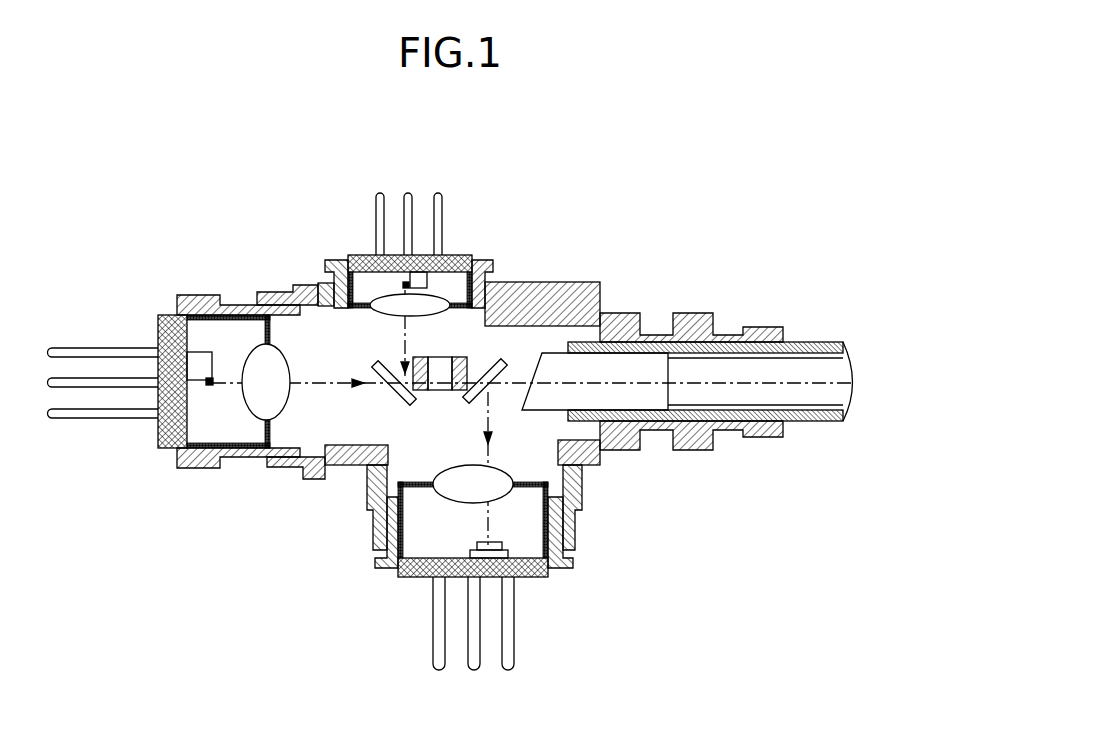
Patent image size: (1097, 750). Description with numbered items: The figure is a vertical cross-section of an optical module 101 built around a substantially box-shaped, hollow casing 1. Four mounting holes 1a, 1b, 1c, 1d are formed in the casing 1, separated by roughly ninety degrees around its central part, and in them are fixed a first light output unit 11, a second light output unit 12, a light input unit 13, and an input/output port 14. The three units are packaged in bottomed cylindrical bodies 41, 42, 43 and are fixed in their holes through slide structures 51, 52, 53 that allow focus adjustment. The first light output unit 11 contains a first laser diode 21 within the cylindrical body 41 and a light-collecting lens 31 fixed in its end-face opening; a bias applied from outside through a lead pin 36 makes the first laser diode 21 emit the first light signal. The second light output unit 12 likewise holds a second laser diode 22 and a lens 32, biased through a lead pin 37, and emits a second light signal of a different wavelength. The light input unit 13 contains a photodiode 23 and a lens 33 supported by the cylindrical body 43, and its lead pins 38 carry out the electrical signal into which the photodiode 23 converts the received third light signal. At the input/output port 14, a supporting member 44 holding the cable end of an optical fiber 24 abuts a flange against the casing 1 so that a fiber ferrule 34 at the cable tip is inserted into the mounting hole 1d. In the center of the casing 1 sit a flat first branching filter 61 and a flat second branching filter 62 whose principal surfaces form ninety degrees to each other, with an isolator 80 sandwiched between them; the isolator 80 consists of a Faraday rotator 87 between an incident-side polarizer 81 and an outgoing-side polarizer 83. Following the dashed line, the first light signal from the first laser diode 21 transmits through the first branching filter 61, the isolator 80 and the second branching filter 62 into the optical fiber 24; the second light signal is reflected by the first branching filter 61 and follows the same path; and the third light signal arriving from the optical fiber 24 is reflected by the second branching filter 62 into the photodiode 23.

The optical module 101 is at (530, 184).
The casing 1 is at (585, 282).
The mounting hole 1a is at (315, 470).
The mounting hole 1b is at (530, 293).
The mounting hole 1c is at (372, 498).
The mounting hole 1d is at (595, 432).
The first light output unit 11 is at (165, 323).
The second light output unit 12 is at (452, 257).
The light input unit 13 is at (555, 579).
The input/output port 14 is at (638, 446).
The first laser diode 21 is at (212, 378).
The second laser diode 22 is at (404, 283).
The photodiode 23 is at (478, 546).
The optical fiber 24 is at (727, 365).
The lens 31 is at (246, 410).
The lens 32 is at (355, 278).
The lens 33 is at (535, 578).
The fiber ferrule 34 is at (650, 365).
The lead pin 36 is at (58, 350).
The lead pin 37 is at (378, 205).
The lead pins of third subassembly 38 is at (510, 648).
The cylindrical body 41 is at (273, 297).
The cylindrical body 42 is at (457, 307).
The cylindrical body 43 is at (412, 579).
The supporting member 44 is at (618, 318).
The slide structure 51 is at (190, 468).
The slide structure 52 is at (488, 260).
The slide structure 53 is at (574, 563).
The first branching filter 61 is at (337, 465).
The second branching filter 62 is at (490, 370).
The isolator 80 is at (455, 357).
The incident-side polarizer 81 is at (405, 395).
The outgoing-side polarizer 83 is at (455, 392).
The Faraday rotator 87 is at (440, 392).